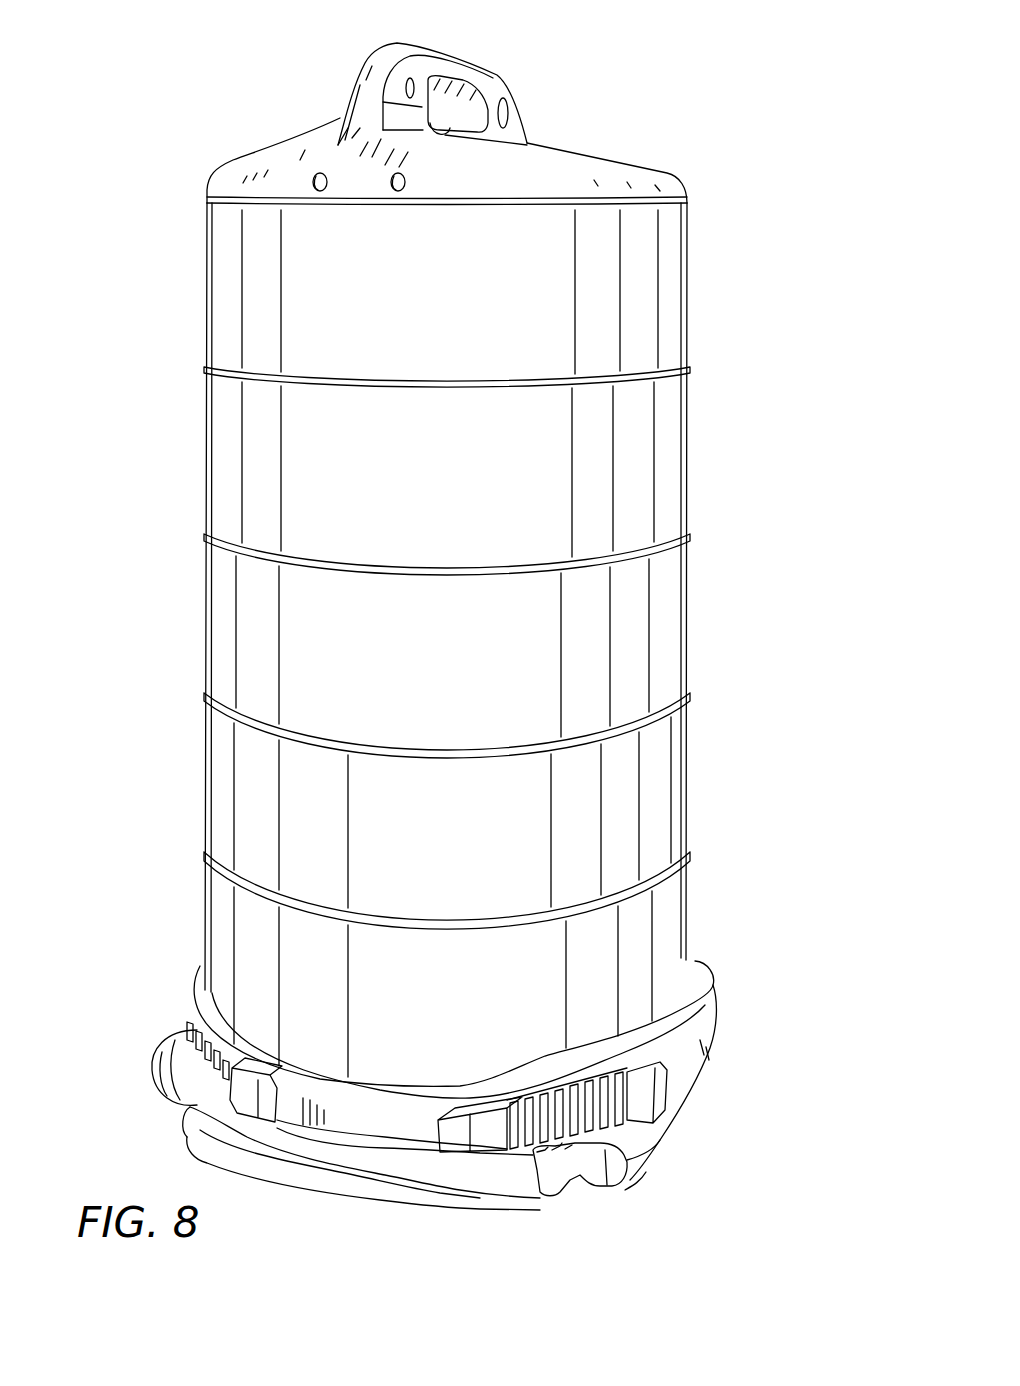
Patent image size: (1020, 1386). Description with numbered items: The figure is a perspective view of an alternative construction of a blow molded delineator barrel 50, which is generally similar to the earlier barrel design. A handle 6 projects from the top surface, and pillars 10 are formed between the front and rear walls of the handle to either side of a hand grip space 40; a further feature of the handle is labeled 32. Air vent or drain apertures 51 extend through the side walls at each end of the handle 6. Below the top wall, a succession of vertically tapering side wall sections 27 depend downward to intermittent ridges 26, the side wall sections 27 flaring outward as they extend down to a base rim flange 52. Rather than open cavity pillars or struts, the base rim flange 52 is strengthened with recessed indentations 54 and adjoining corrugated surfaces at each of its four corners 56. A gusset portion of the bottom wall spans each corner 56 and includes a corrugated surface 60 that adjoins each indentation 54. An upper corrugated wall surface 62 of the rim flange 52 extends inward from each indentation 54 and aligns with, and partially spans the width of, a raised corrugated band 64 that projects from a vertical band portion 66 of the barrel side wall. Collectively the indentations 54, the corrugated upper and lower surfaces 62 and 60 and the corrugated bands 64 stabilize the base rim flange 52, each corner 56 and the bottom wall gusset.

The handle 6 is at (485, 72).
The pillars 10 is at (405, 88).
The intermittent ridges 26 is at (207, 985).
The side wall sections 27 is at (679, 904).
The handle slot 32 is at (414, 80).
The hand grip space 40 is at (493, 79).
The delineator barrel 50 is at (685, 132).
The air vent or drain apertures 51 is at (392, 175).
The base rim flange 52 is at (703, 1075).
The recessed indentations 54 is at (163, 1100).
The corners 56 is at (717, 1010).
The corrugated surface 60 is at (563, 1192).
The upper corrugated wall surface 62 is at (168, 1059).
The raised corrugated band 64 is at (190, 1019).
The vertical band portion 66 is at (327, 1117).